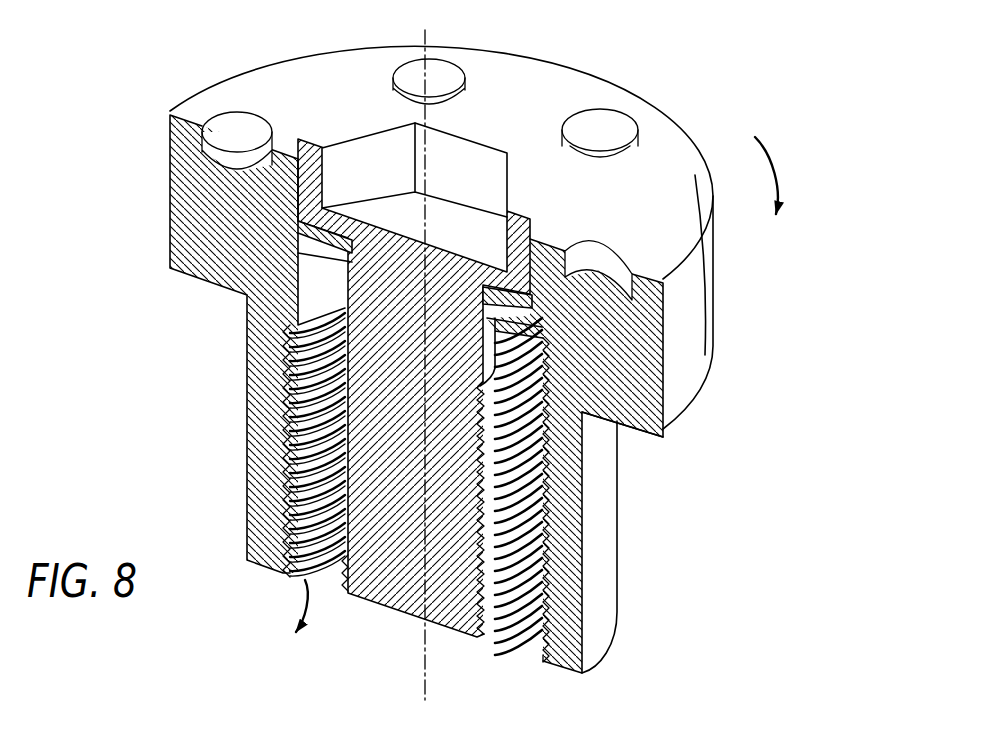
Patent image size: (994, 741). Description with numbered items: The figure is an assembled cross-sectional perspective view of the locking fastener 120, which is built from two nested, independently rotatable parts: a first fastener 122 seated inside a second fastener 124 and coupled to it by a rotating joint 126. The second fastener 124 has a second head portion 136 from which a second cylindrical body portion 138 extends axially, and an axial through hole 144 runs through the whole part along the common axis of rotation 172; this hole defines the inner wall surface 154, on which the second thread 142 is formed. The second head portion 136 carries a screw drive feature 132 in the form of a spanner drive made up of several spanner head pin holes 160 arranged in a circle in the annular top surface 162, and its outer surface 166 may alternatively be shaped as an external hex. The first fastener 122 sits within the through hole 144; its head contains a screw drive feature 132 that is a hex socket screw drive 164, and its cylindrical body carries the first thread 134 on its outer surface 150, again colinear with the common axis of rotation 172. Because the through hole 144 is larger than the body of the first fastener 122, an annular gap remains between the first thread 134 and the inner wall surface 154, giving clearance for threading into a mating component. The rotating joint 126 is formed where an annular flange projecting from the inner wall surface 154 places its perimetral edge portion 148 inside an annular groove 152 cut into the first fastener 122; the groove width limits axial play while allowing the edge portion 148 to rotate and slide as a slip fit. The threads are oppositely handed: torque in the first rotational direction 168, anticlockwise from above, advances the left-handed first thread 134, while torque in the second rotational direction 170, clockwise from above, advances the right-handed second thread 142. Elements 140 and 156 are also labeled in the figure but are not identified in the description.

The locking fastener 120 is at (730, 112).
The first fastener 122 is at (455, 635).
The second fastener 124 is at (638, 428).
The rotating joint 126 is at (315, 300).
The screw drive feature 132 is at (475, 142).
The first thread 134 is at (495, 532).
The second head portion 136 is at (637, 366).
The second cylindrical body portion 138 is at (405, 597).
The flange top edge 140 is at (238, 97).
The second thread 142 is at (303, 414).
The axial through hole 144 is at (518, 628).
The perimetral edge portion 148 is at (336, 240).
The outer surface 150 is at (525, 583).
The annular groove 152 is at (308, 240).
The inner wall surface 154 is at (303, 477).
The hub outer surface 156 is at (605, 560).
The spanner head pin holes 160 is at (602, 107).
The annular top surface 162 is at (642, 216).
The hex socket screw drive 164 is at (378, 135).
The outer surface 166 is at (706, 328).
The first rotational direction 168 is at (305, 580).
The second rotational direction 170 is at (780, 181).
The common axis of rotation 172 is at (420, 663).